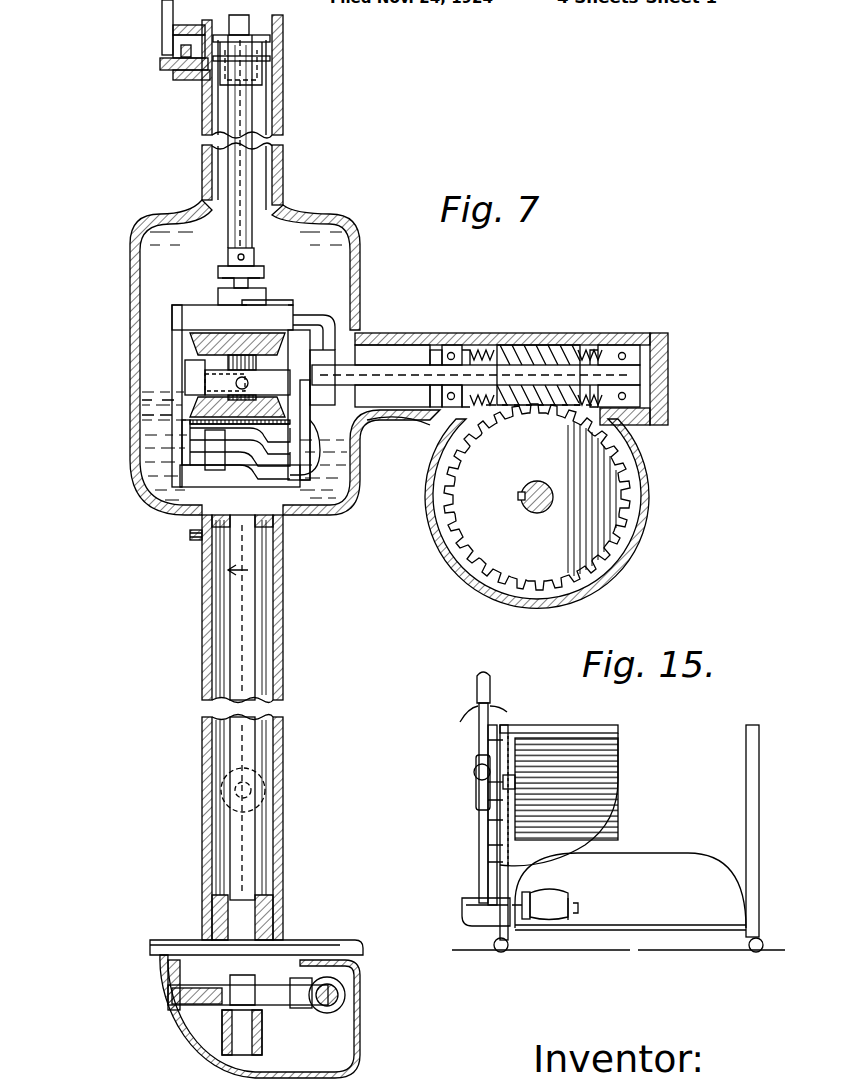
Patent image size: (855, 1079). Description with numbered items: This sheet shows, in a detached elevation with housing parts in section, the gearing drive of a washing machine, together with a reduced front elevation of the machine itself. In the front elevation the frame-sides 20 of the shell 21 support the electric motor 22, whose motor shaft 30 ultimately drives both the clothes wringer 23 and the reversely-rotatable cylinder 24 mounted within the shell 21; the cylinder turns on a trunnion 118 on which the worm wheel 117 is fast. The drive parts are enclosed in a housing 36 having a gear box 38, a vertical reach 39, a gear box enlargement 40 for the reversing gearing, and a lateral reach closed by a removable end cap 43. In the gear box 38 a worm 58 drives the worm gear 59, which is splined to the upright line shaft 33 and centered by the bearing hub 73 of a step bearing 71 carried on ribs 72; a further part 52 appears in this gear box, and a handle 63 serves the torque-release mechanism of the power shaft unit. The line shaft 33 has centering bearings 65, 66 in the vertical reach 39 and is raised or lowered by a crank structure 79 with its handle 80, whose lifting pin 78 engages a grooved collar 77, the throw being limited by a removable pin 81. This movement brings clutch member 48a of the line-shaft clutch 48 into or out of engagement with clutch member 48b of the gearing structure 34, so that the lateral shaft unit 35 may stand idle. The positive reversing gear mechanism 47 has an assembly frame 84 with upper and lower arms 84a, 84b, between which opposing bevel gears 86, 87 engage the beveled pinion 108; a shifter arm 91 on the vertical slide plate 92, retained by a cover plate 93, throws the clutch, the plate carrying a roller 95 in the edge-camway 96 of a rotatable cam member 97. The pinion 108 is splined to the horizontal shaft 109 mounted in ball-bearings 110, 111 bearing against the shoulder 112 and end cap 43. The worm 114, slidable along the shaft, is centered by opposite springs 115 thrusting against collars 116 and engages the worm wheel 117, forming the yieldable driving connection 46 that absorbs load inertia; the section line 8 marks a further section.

In FIG. 7, the section line 8 is at (248, 5).
In FIG. 7, the grooved collar 77 is at (270, 47).
In FIG. 7, the lifting pin 78 is at (260, 58).
In FIG. 7, the handle 80 is at (162, 11).
In FIG. 7, the crank structure 79 is at (160, 65).
In FIG. 7, the removable pin 81 is at (184, 73).
In FIG. 7, the housing 36 is at (116, 280).
In FIG. 7, the end cap 43 is at (670, 357).
In FIG. 7, the worm wheel 117 is at (598, 472).
In FIG. 7, the yieldable driving connection 46 is at (590, 350).
In FIG. 7, the trunnion 118 is at (542, 514).
In FIG. 15, the trunnion 118 is at (505, 782).
In FIG. 7, the horizontal shaft 109 is at (395, 368).
In FIG. 7, the shoulder 112 is at (442, 346).
In FIG. 7, the ball-bearing 110 is at (451, 350).
In FIG. 7, the collar 116 is at (483, 348).
In FIG. 7, the worm 114 is at (540, 352).
In FIG. 7, the springs 115 is at (576, 407).
In FIG. 7, the ball-bearing 111 is at (620, 350).
In FIG. 7, the beveled pinion 108 is at (320, 395).
In FIG. 7, the lateral shaft unit 35 is at (394, 406).
In FIG. 7, the line-shaft clutch 48 is at (274, 262).
In FIG. 7, the clutch member 48a is at (225, 258).
In FIG. 7, the clutch member 48b is at (268, 297).
In FIG. 7, the assembly frame 84 is at (298, 345).
In FIG. 7, the upper arm 84a is at (180, 312).
In FIG. 7, the lower arm 84b is at (178, 470).
In FIG. 7, the bevel gear 86 is at (203, 345).
In FIG. 7, the gearing structure 34 is at (190, 355).
In FIG. 7, the shifter arm 91 is at (205, 380).
In FIG. 7, the bevel gear 87 is at (190, 395).
In FIG. 7, the positive reversing gear mechanism 47 is at (200, 408).
In FIG. 7, the detachable cover plate 93 is at (195, 426).
In FIG. 7, the vertical slide plate 92 is at (190, 446).
In FIG. 7, the roller 95 is at (180, 450).
In FIG. 7, the edge-camway 96 is at (232, 448).
In FIG. 7, the cam member 97 is at (276, 460).
In FIG. 7, the gear box enlargement 40 is at (121, 473).
In FIG. 15, the gear box enlargement 40 is at (476, 794).
In FIG. 7, the centering bearing 66 is at (200, 540).
In FIG. 7, the line shaft 33 is at (218, 735).
In FIG. 7, the vertical reach 39 is at (285, 824).
In FIG. 15, the vertical reach 39 is at (488, 827).
In FIG. 7, the centering bearing 65 is at (266, 907).
In FIG. 7, the handle 63 is at (338, 947).
In FIG. 7, the gear box 38 is at (158, 1054).
In FIG. 7, the cross shaft 52 is at (305, 977).
In FIG. 7, the worm gear 59 is at (338, 990).
In FIG. 7, the worm 58 is at (346, 997).
In FIG. 7, the step bearing 71 is at (228, 1034).
In FIG. 7, the ribs 72 is at (188, 1008).
In FIG. 7, the centralizing bearing hub 73 is at (180, 1000).
In FIG. 15, the frame-sides 20 is at (752, 725).
In FIG. 15, the clothes wringer 23 is at (477, 687).
In FIG. 15, the shell 21 is at (510, 725).
In FIG. 15, the cylinder 24 is at (578, 740).
In FIG. 15, the electric motor 22 is at (548, 922).
In FIG. 15, the motor shaft 30 is at (528, 893).